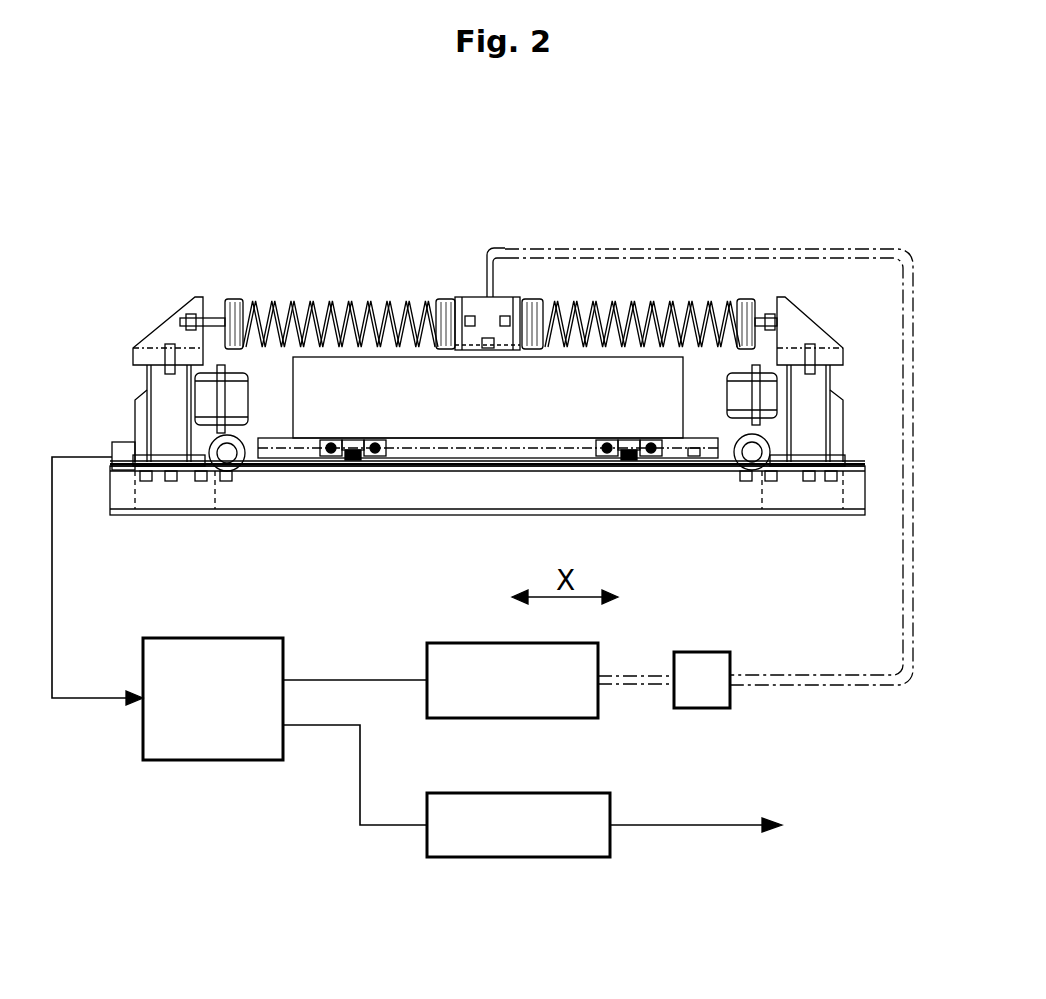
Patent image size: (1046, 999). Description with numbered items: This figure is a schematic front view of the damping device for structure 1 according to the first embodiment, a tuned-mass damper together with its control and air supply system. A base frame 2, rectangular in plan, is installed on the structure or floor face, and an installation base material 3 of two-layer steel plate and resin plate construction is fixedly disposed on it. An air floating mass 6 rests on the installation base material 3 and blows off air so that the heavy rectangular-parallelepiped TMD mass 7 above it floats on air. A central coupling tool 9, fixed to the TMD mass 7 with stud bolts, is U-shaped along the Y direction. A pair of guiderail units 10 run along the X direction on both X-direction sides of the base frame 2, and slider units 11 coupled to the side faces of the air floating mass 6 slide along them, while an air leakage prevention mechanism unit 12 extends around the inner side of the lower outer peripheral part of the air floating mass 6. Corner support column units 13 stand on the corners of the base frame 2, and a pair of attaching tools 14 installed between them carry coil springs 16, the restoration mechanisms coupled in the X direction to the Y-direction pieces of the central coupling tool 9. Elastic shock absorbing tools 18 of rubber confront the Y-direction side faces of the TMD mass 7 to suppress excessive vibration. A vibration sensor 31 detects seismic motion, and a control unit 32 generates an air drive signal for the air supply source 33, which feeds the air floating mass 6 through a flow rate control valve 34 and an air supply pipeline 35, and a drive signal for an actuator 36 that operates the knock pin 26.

The damping device for structure 1 is at (110, 265).
The base frame 2 is at (175, 515).
The installation base material 3 is at (738, 478).
The air floating mass 6 is at (430, 456).
The TMD mass 7 is at (390, 372).
The central coupling tool 9 is at (473, 297).
The guiderail units 10 is at (470, 466).
The slider units 11 is at (351, 460).
The air leakage prevention mechanism unit 12 is at (693, 462).
The corner support column units 13 is at (158, 380).
The attaching tools 14 is at (180, 308).
The coil springs 16 is at (322, 303).
The elastic shock absorbing tools 18 is at (240, 403).
The knock pin 26 is at (878, 844).
The vibration sensor 31 is at (120, 441).
The control unit 32 is at (143, 648).
The air supply source 33 is at (530, 718).
The flow rate control valve 34 is at (730, 663).
The air supply pipeline 35 is at (862, 684).
The actuator 36 is at (612, 803).